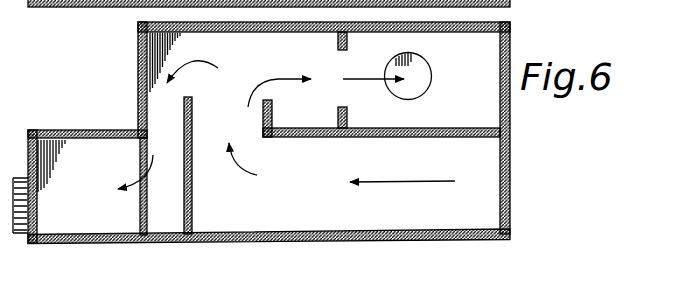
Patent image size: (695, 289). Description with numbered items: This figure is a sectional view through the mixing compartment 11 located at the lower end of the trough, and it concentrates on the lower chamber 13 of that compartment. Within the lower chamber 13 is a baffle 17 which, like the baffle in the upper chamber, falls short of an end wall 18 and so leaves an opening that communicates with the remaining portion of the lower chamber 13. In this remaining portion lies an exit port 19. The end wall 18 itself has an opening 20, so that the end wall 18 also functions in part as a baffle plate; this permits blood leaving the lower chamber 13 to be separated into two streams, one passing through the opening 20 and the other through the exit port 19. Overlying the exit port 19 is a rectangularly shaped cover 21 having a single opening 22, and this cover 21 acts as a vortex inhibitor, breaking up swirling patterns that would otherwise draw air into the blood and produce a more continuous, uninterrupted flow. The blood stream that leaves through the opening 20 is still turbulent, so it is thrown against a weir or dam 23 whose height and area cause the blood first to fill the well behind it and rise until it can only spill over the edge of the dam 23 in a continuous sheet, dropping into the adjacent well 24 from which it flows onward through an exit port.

The mixing compartment 11 is at (291, 242).
The lower chamber 13 is at (473, 192).
The baffle 17 is at (305, 137).
The end wall 18 is at (192, 170).
The exit port 19 is at (432, 70).
The opening 20 is at (188, 96).
The cover 21 is at (423, 33).
The opening 22 is at (343, 107).
The weir 23 is at (118, 7).
The well 24 is at (88, 150).